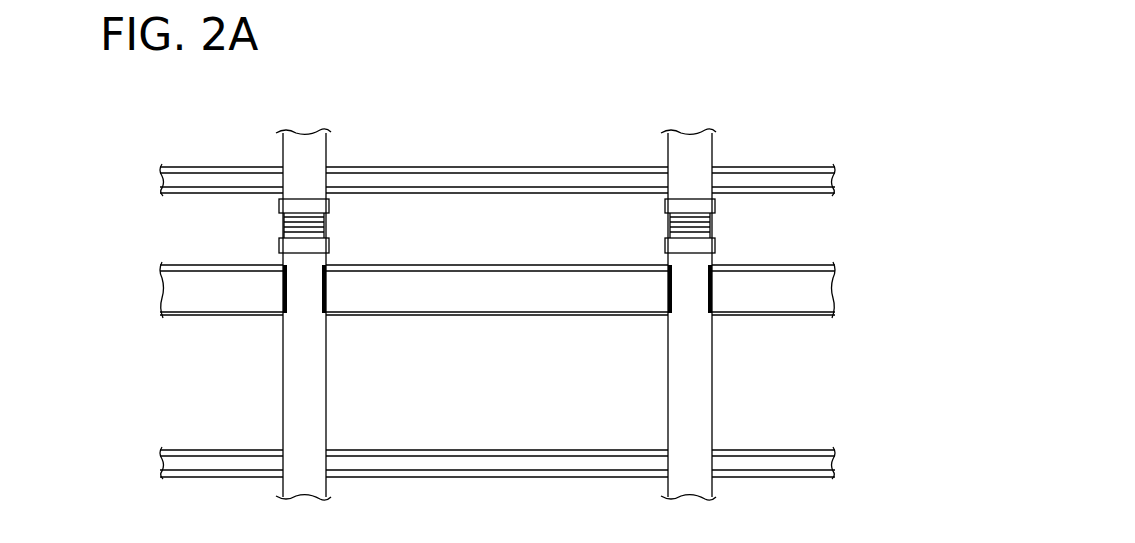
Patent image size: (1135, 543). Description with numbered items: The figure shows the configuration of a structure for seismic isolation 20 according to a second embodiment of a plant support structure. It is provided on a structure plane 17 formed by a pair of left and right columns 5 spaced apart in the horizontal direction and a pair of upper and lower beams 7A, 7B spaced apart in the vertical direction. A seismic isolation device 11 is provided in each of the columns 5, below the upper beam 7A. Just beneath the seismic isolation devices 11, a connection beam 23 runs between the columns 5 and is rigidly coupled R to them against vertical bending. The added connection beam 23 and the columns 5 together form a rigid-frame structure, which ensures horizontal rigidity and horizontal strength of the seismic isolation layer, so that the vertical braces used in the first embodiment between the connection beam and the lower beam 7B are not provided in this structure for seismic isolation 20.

The structure for seismic isolation 20 is at (546, 132).
The upper beam 7A is at (232, 167).
The lower beam 7B is at (213, 478).
The column 5 is at (326, 376).
The seismic isolation device 11 is at (328, 225).
The connection beam 23 is at (179, 263).
The structure plane 17 is at (510, 380).
The rigid coupling R is at (322, 308).